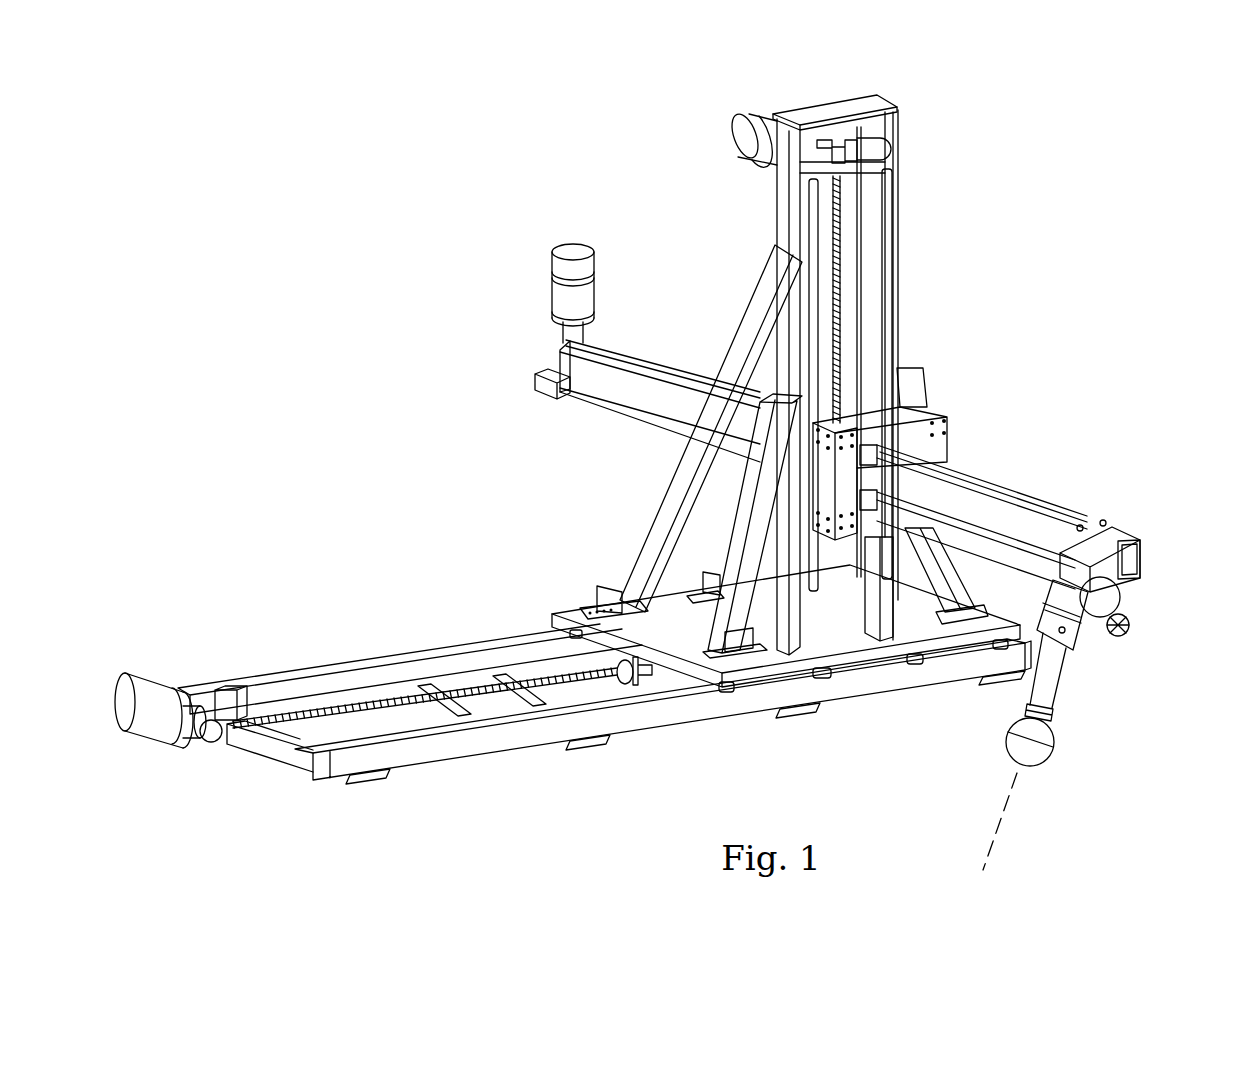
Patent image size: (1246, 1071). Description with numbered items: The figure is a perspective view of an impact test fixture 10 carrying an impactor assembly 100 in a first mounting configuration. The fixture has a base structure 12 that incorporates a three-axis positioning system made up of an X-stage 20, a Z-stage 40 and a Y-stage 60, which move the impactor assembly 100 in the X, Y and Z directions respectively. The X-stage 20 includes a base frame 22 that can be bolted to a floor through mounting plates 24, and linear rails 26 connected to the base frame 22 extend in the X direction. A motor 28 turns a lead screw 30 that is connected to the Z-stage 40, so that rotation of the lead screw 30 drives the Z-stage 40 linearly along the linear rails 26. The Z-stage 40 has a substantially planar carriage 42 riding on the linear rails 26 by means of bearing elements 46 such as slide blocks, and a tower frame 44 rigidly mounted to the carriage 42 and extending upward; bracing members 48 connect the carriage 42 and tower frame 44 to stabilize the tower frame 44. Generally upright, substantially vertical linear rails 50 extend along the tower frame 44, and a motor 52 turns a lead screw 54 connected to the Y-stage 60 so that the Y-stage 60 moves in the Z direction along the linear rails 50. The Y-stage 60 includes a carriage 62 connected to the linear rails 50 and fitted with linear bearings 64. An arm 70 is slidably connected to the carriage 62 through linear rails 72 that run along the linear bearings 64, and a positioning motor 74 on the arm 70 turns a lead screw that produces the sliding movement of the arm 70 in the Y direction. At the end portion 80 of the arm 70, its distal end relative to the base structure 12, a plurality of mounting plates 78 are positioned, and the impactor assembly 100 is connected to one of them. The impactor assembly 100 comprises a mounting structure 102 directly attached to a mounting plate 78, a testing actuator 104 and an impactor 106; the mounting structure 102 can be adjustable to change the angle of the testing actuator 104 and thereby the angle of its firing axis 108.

The impact test fixture 10 is at (372, 231).
The base structure 12 is at (848, 108).
The X-stage 20 is at (292, 642).
The base frame 22 is at (495, 748).
The mounting plates 24 is at (388, 778).
The linear rails 26 is at (355, 668).
The motor 28 is at (146, 672).
The lead screw 30 is at (500, 681).
The Z-stage 40 is at (615, 530).
The carriage 42 is at (568, 603).
The tower frame 44 is at (777, 203).
The bearing elements 46 is at (730, 692).
The bracing members 48 is at (668, 492).
The linear rails 50 is at (812, 130).
The motor 52 is at (758, 115).
The lead screw 54 is at (843, 255).
The Y-stage 60 is at (957, 423).
The carriage 62 is at (942, 410).
The linear bearings 64 is at (948, 465).
The arm 70 is at (548, 356).
The linear rails 72 is at (625, 345).
The positioning motor 74 is at (594, 263).
The mounting plates 78 is at (1112, 528).
The end portion 80 is at (1140, 535).
The impactor assembly 100 is at (1133, 740).
The mounting structure 102 is at (1093, 643).
The testing actuator 104 is at (1060, 680).
The impactor 106 is at (1055, 753).
The firing axis 108 is at (1003, 822).